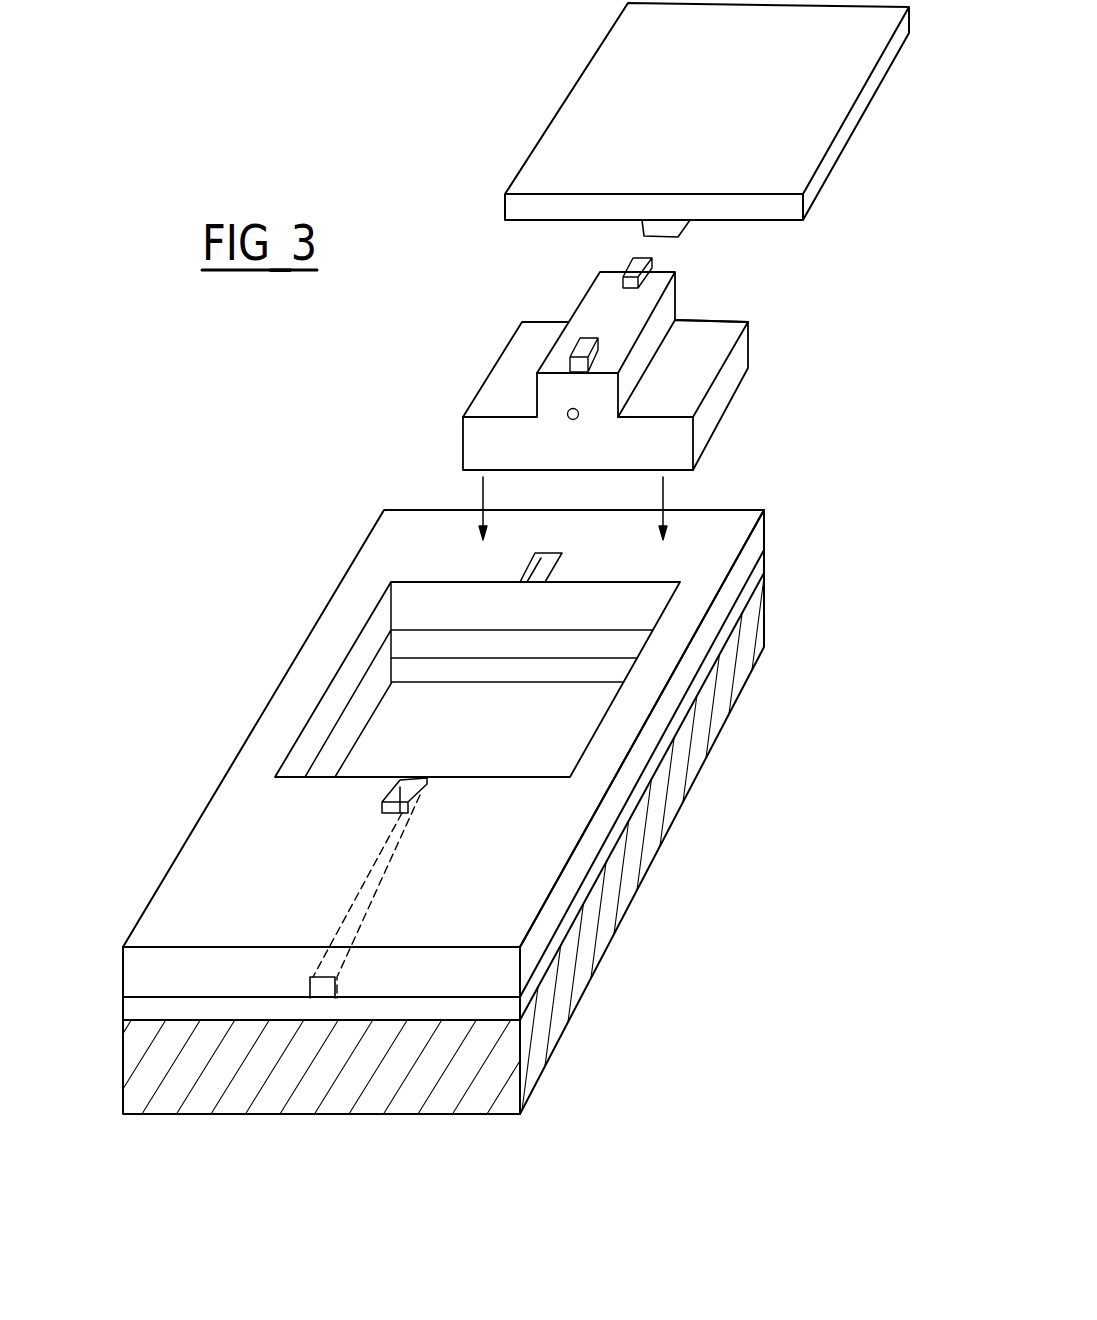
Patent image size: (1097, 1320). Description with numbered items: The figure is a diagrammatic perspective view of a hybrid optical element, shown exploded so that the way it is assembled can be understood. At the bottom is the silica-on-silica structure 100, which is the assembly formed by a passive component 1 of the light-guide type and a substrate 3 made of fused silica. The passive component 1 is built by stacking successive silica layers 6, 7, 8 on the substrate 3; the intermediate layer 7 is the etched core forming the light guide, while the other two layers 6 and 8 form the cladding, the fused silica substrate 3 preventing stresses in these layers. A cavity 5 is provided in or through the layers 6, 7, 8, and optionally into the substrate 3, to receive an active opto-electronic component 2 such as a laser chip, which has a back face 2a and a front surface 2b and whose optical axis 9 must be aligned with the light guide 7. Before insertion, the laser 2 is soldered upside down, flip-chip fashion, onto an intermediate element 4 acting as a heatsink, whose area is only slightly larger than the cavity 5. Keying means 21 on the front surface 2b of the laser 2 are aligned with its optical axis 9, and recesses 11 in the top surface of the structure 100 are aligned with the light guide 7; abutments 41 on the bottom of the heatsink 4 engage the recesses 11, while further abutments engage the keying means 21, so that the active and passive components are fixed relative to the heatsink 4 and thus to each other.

The silica-on-silica structure 100 is at (75, 918).
The passive component 1 is at (97, 930).
The opto-electronic component 2 is at (608, 359).
The back face 2a is at (705, 452).
The front surface 2b is at (637, 313).
The substrate 3 is at (132, 1067).
The intermediate element 4 is at (707, 127).
The abutments 41 is at (645, 229).
The cavity 5 is at (399, 704).
The silica layer 6 is at (132, 1008).
The intermediate layer 7 is at (310, 988).
The silica layer 8 is at (132, 964).
The optical axis 9 is at (567, 416).
The recesses 11 is at (522, 567).
The keying means 21 is at (650, 262).